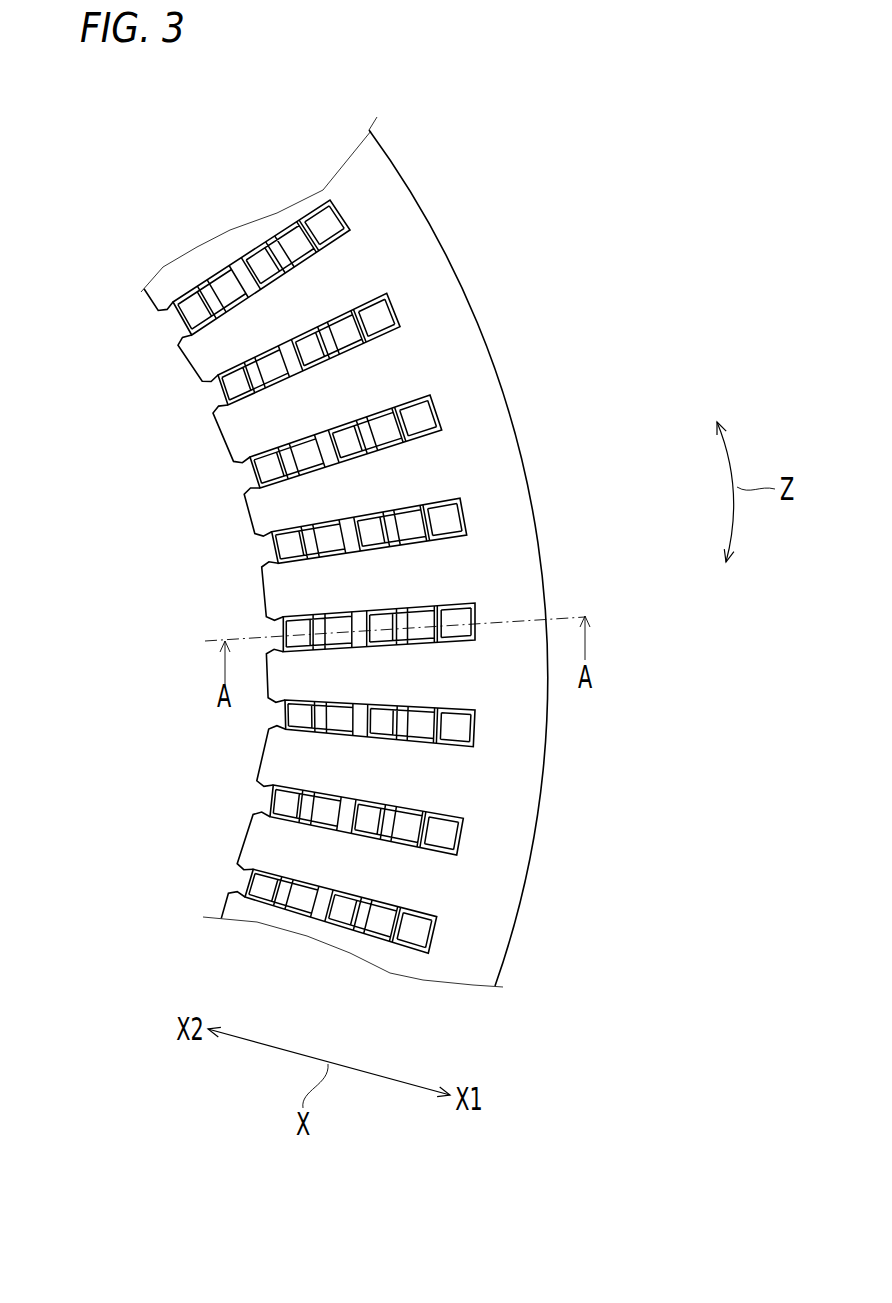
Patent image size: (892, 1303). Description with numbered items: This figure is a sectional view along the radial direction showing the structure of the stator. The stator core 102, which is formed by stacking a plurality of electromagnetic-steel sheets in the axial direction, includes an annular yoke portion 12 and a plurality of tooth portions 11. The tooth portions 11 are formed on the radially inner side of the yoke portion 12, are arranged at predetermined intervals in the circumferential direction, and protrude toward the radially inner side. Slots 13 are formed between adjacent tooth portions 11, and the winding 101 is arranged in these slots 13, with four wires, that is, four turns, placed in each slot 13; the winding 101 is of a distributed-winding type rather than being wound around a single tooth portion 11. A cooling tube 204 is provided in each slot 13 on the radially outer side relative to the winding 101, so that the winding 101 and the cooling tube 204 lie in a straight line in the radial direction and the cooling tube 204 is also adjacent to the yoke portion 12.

The tooth portions 11 is at (337, 273).
The yoke portion 12 is at (430, 340).
The slots 13 is at (265, 348).
The winding 101 is at (387, 432).
The stator core 102 is at (410, 552).
The cooling tube 204 is at (440, 512).